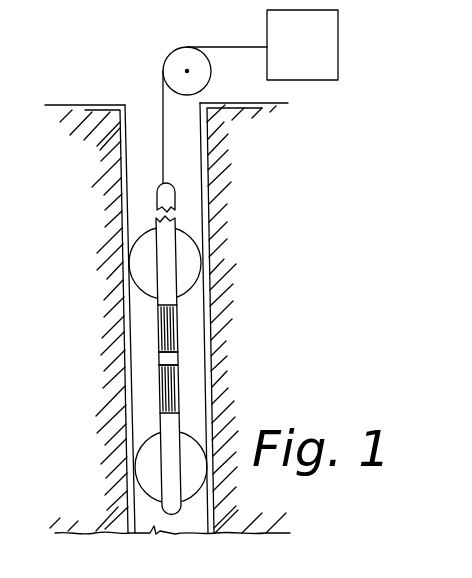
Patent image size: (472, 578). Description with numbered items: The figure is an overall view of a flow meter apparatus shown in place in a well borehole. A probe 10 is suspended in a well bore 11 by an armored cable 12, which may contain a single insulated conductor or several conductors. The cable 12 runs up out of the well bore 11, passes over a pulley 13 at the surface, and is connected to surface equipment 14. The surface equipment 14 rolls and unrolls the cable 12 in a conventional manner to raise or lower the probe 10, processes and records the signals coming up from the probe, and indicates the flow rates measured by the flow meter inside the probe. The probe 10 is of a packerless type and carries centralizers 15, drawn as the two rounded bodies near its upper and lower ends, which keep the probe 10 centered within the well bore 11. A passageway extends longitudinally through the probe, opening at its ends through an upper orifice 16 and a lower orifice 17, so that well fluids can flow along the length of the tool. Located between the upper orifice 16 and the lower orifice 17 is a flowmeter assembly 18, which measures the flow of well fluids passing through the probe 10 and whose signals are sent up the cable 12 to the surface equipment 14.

The probe 10 is at (178, 186).
The well bore 11 is at (124, 180).
The armored cable 12 is at (163, 135).
The pulley 13 is at (178, 68).
The surface equipment 14 is at (308, 70).
The centralizers 15 is at (190, 298).
The upper orifice 16 is at (177, 330).
The lower orifice 17 is at (177, 395).
The flowmeter assembly 18 is at (182, 358).